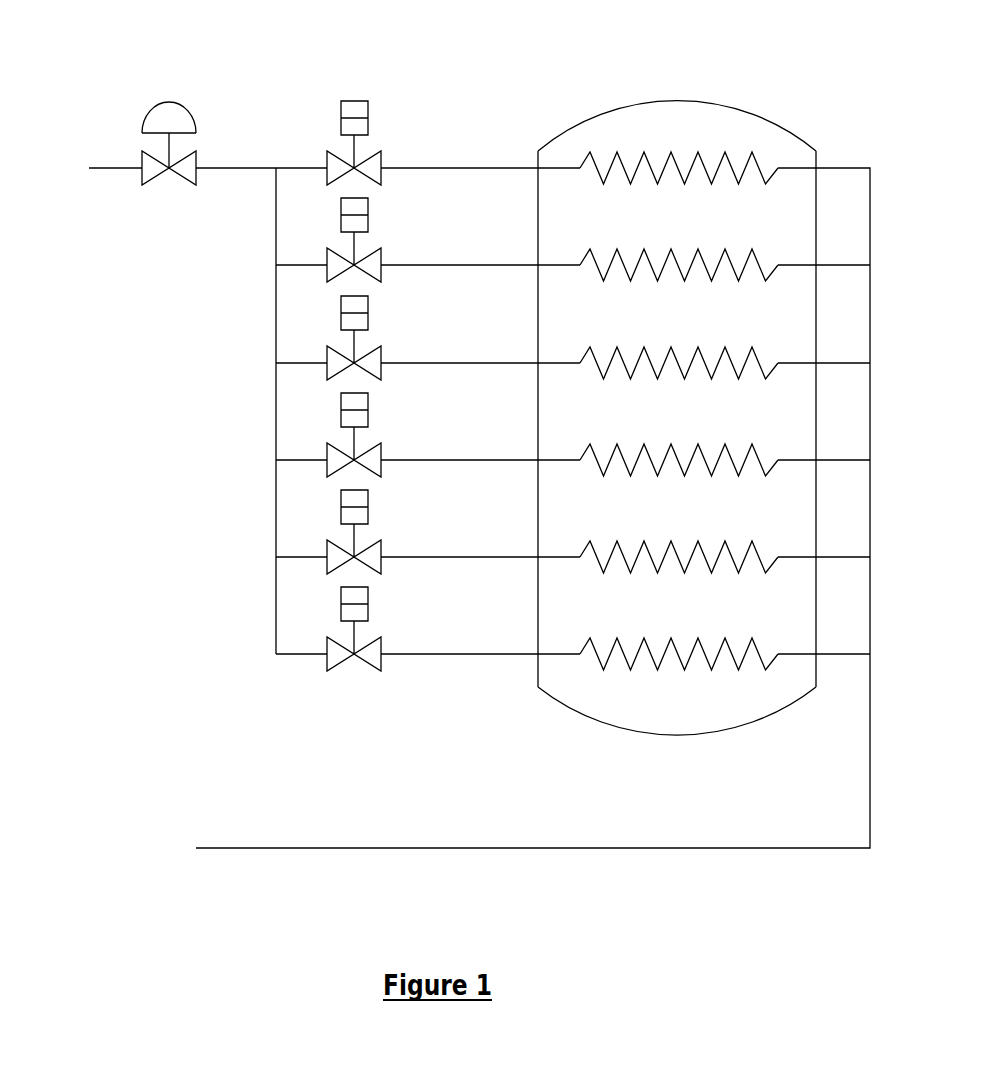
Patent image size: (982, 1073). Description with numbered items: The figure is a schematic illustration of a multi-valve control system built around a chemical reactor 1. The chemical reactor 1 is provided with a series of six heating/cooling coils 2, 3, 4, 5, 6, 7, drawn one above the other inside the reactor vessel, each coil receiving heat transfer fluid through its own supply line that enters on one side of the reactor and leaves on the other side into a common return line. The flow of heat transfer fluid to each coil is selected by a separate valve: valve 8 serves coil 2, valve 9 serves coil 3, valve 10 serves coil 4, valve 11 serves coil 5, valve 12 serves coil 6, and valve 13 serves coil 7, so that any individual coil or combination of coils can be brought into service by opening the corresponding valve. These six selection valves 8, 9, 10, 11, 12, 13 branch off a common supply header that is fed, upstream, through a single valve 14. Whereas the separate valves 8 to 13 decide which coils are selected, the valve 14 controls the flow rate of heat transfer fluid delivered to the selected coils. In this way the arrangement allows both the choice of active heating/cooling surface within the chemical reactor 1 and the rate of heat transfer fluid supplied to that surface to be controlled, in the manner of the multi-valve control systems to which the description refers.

The chemical reactor 1 is at (738, 108).
The heating/cooling coil 2 is at (758, 157).
The heating/cooling coil 3 is at (759, 255).
The heating/cooling coil 4 is at (759, 353).
The heating/cooling coil 5 is at (759, 450).
The heating/cooling coil 6 is at (759, 547).
The heating/cooling coil 7 is at (759, 644).
The valve 8 is at (326, 151).
The valve 9 is at (326, 249).
The valve 10 is at (326, 347).
The valve 11 is at (326, 444).
The valve 12 is at (326, 541).
The valve 13 is at (326, 638).
The valve 14 is at (140, 150).